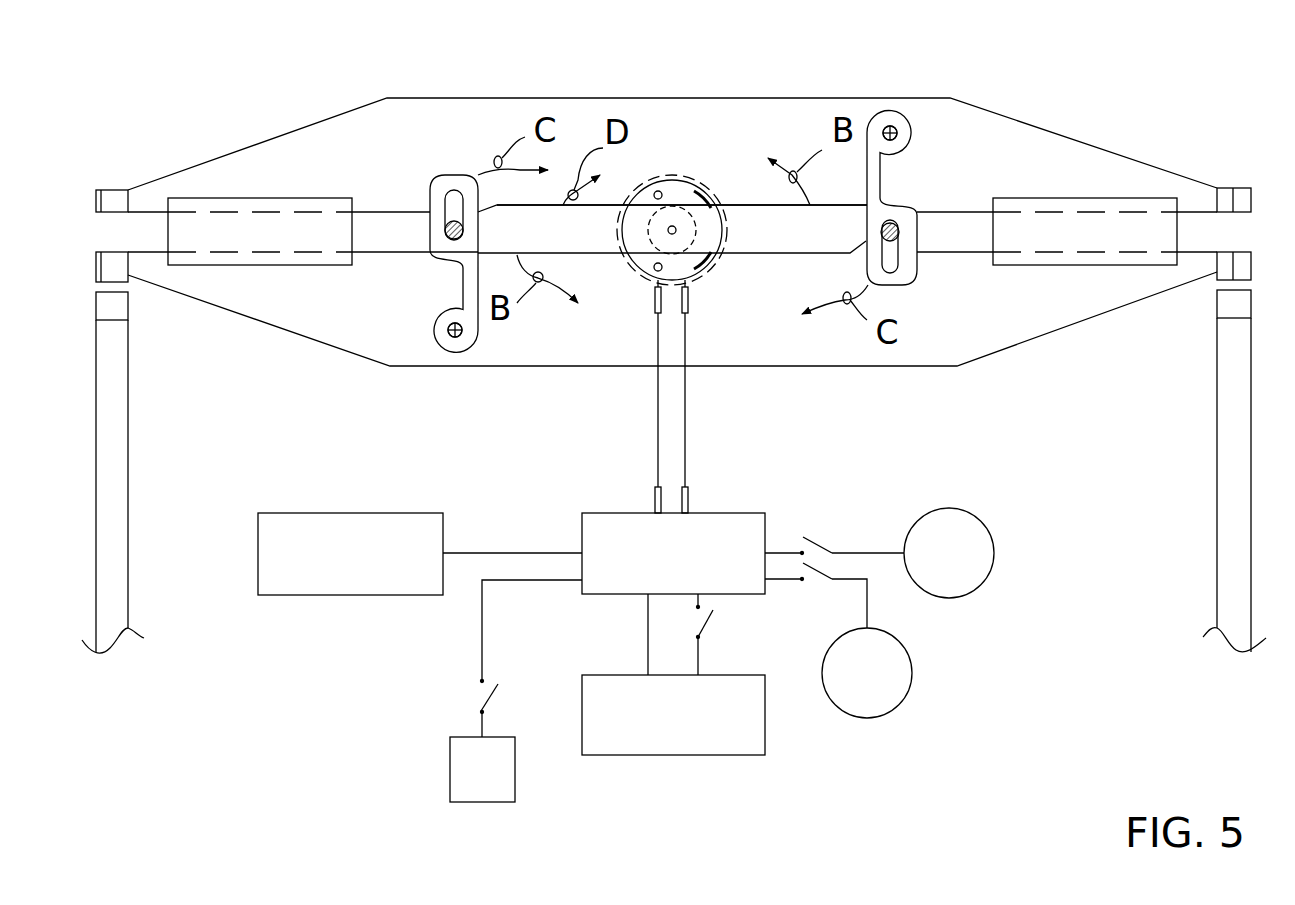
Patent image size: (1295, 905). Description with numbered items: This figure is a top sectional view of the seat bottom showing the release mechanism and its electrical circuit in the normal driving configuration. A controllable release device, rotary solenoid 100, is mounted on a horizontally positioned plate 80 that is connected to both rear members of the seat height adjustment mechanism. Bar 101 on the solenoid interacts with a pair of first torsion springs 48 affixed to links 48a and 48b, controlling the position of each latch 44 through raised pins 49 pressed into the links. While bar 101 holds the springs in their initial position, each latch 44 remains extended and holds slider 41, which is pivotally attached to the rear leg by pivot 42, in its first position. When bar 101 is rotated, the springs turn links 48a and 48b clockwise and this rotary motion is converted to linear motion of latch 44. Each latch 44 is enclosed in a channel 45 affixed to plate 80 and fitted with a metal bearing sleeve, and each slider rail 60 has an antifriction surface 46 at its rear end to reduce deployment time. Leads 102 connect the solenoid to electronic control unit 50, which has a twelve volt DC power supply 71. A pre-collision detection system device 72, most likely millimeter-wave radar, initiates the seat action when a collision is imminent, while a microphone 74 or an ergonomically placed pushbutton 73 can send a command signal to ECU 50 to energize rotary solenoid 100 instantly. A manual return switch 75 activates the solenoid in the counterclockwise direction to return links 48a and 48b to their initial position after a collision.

The slider 41 is at (110, 308).
The pivot 42 is at (110, 288).
The latch 44 is at (147, 233).
The channel 45 is at (252, 233).
The antifriction surface 46 is at (112, 208).
The first torsion spring 48 is at (453, 337).
The link 48a is at (890, 152).
The link 48b is at (450, 310).
The raised pin 49 is at (460, 222).
The electronic control unit 50 is at (627, 587).
The slider rail 60 is at (110, 450).
The power supply 71 is at (385, 595).
The pre-collision detection system device 72 is at (628, 743).
The pushbutton 73 is at (885, 693).
The microphone 74 is at (962, 575).
The manual return switch 75 is at (480, 792).
The plate 80 is at (388, 162).
The rotary solenoid 100 is at (675, 188).
The bar 101 is at (752, 228).
The leads 102 is at (686, 303).